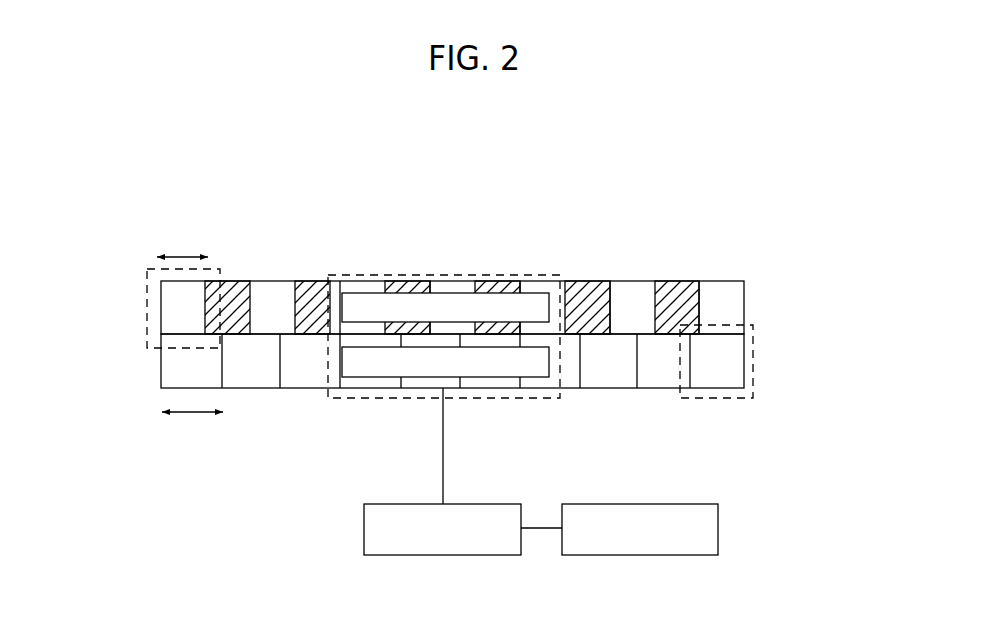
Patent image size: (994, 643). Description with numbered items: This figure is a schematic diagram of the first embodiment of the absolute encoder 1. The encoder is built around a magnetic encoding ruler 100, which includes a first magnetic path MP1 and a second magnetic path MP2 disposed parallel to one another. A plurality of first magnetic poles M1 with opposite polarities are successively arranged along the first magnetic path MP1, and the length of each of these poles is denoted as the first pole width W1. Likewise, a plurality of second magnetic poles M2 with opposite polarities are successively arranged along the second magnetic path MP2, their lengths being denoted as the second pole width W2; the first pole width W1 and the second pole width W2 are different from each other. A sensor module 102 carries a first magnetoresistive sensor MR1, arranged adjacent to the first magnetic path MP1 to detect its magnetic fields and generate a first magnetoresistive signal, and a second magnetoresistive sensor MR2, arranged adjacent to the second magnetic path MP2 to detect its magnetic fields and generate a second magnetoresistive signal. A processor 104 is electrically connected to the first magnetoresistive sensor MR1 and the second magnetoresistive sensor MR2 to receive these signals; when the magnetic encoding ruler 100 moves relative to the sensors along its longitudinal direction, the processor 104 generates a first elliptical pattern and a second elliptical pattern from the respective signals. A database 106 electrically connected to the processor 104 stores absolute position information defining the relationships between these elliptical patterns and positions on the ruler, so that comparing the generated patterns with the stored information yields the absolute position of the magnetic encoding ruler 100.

The absolute encoder 1 is at (148, 202).
The magnetic encoding ruler 100 is at (840, 302).
The first magnetic path MP1 is at (744, 299).
The second magnetic path MP2 is at (744, 362).
The sensor module 102 is at (612, 160).
The first magnetoresistive sensor MR1 is at (483, 313).
The second magnetoresistive sensor MR2 is at (408, 355).
The first magnetic pole M1 is at (146, 297).
The second magnetic pole M2 is at (708, 400).
The first pole width W1 is at (182, 242).
The second pole width W2 is at (192, 428).
The processor 104 is at (463, 471).
The database 106 is at (640, 529).